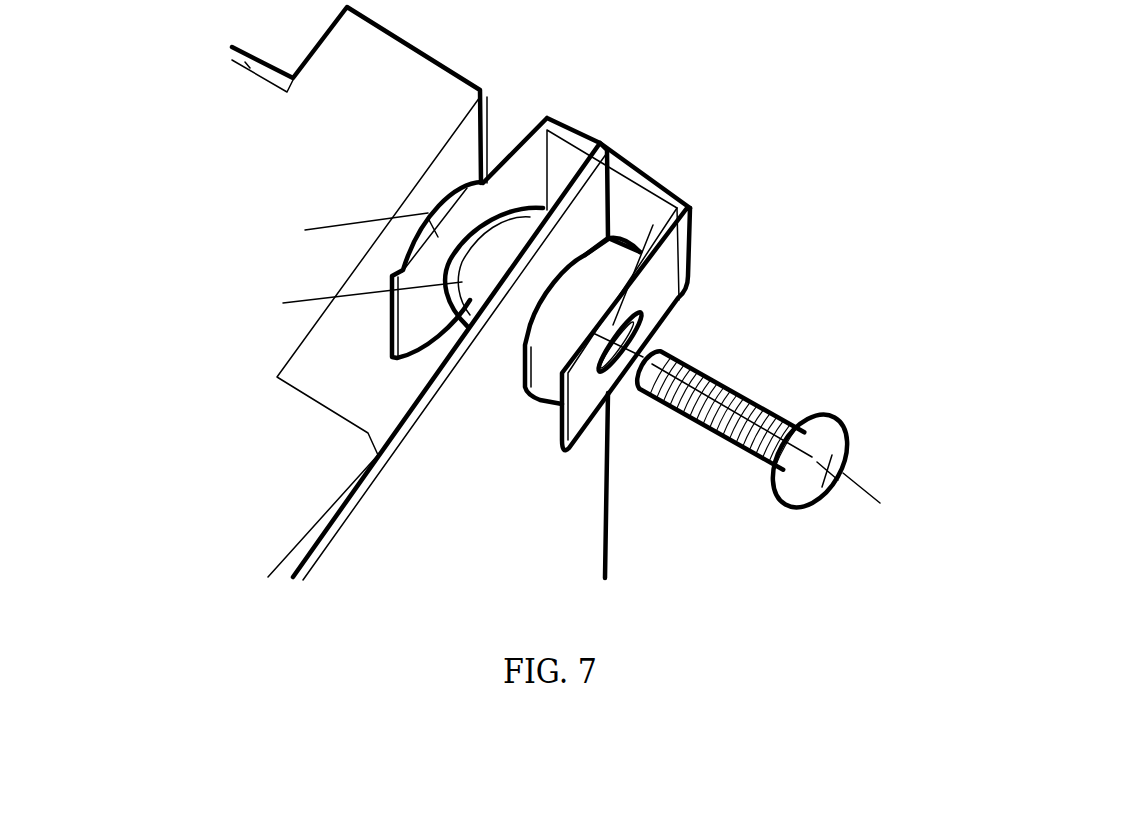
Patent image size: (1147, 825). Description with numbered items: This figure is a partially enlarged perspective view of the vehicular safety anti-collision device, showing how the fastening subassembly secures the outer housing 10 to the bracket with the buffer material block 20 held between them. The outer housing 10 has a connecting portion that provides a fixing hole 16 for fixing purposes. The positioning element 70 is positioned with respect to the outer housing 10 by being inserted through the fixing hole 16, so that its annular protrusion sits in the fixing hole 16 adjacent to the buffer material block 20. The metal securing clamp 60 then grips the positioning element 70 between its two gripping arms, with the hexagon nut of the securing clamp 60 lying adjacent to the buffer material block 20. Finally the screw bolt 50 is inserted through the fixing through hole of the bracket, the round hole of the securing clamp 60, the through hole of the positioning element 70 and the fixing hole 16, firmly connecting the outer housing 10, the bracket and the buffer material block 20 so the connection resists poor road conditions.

The outer housing 10 is at (580, 217).
The fixing hole 16 is at (597, 240).
The buffer material block 20 is at (337, 158).
The screw bolt 50 is at (687, 358).
The metal securing clamp 60 is at (668, 268).
The positioning element 70 is at (540, 370).